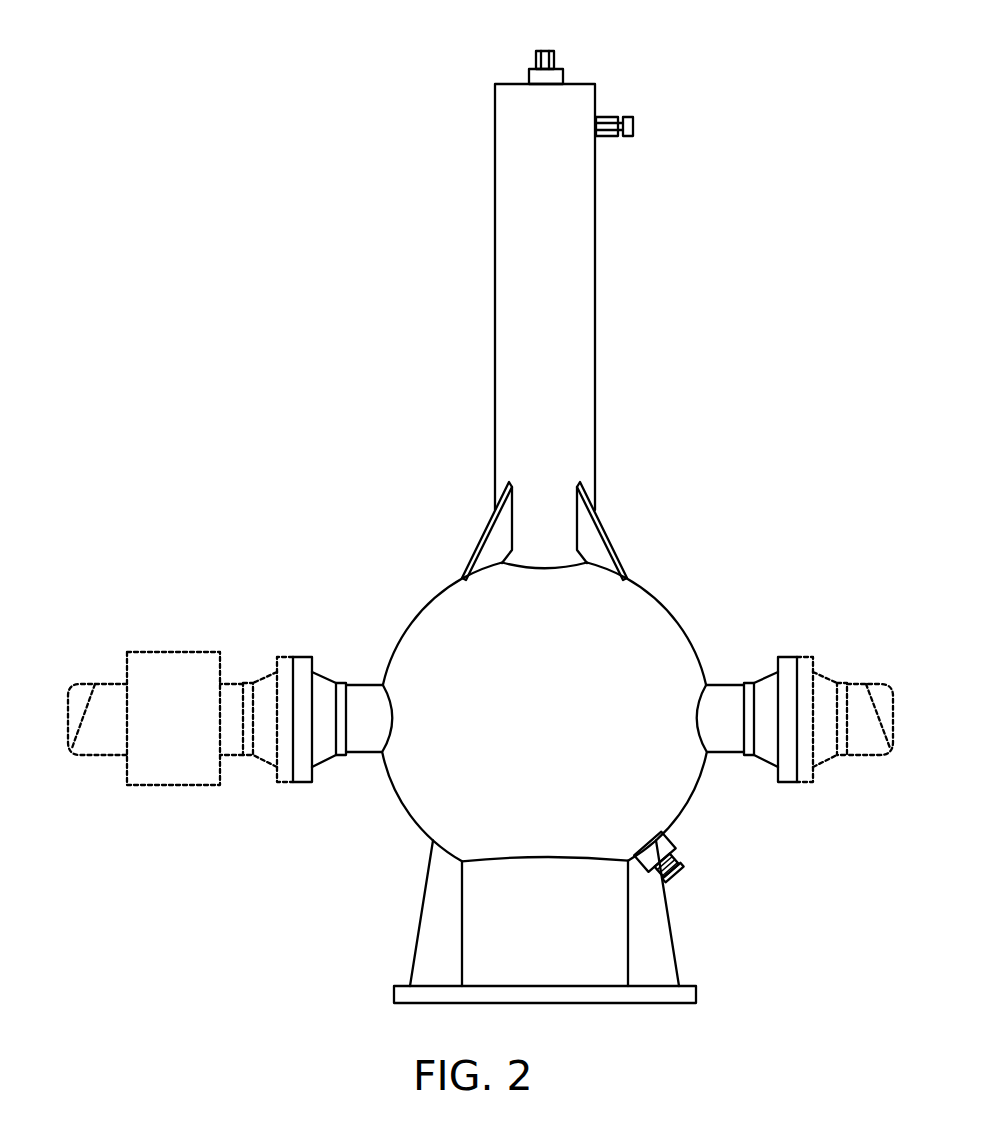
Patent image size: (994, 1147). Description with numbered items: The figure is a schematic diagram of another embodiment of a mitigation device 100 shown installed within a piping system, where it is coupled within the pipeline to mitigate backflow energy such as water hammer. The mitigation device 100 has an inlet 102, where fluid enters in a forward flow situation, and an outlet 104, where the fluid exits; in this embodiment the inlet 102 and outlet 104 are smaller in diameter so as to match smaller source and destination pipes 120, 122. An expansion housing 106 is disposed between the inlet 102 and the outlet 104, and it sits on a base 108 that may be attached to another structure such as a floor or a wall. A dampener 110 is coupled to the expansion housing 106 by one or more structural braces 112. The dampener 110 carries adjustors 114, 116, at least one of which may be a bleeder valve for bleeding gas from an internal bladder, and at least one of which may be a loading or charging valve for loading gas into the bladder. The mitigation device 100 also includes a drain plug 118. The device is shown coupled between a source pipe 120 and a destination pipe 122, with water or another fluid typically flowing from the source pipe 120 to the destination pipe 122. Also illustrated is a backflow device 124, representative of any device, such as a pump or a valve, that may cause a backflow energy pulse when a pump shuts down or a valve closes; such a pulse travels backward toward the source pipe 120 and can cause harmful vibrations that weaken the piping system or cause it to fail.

The mitigation device 100 is at (412, 68).
The inlet 102 is at (725, 693).
The outlet 104 is at (363, 693).
The expansion housing 106 is at (452, 602).
The base 108 is at (445, 962).
The dampener 110 is at (577, 268).
The structural braces 112 is at (594, 535).
The adjustor 114 is at (549, 51).
The adjustor 116 is at (633, 118).
The drain plug 118 is at (672, 879).
The source pipe 120 is at (855, 693).
The destination pipe 122 is at (105, 693).
The backflow device 124 is at (178, 660).